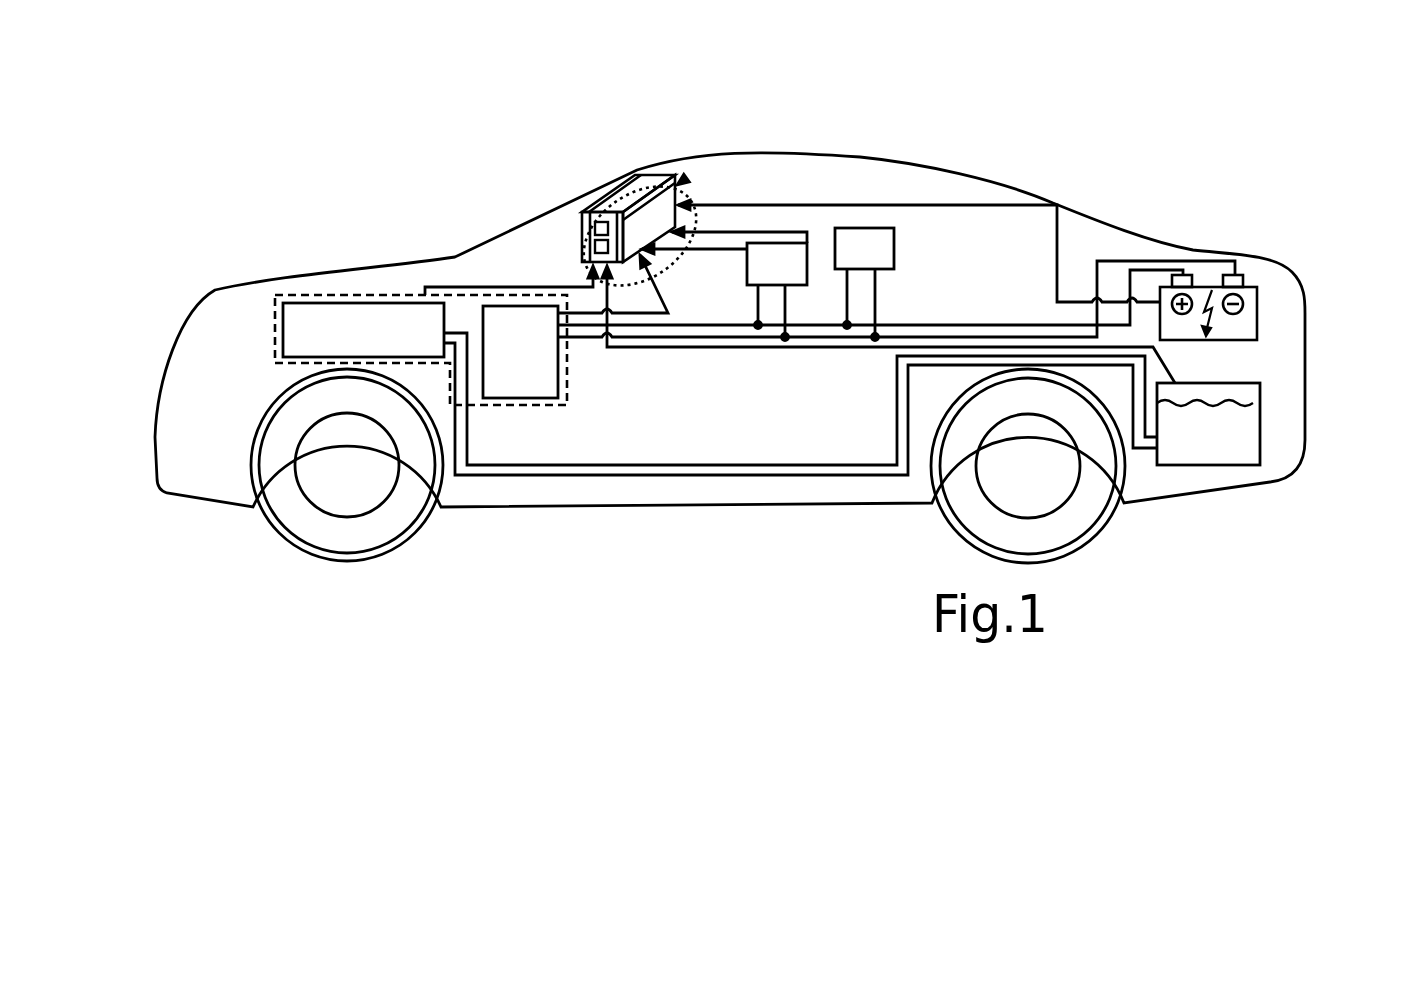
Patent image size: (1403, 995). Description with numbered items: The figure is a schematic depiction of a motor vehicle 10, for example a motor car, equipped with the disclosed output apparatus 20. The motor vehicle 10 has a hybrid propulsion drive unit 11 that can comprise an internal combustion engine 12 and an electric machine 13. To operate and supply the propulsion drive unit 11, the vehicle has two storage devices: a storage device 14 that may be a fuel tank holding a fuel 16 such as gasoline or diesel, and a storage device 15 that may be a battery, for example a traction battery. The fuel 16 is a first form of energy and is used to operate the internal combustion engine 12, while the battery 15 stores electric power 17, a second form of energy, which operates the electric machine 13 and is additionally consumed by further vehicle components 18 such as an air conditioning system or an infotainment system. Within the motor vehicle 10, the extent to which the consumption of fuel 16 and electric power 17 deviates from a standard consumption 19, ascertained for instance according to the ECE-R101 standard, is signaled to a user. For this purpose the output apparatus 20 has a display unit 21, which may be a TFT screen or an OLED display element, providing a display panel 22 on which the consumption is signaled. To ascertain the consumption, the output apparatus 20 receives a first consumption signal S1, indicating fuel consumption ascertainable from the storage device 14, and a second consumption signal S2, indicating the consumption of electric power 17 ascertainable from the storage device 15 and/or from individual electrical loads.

The motor vehicle 10 is at (1113, 210).
The hybrid propulsion drive unit 11 is at (275, 320).
The internal combustion engine 12 is at (312, 303).
The electric machine 13 is at (508, 398).
The storage device 14 is at (1195, 435).
The storage device 15 is at (1260, 308).
The fuel 16 is at (1248, 465).
The electric power 17 is at (1207, 292).
The vehicle components 18 is at (862, 227).
The standard consumption 19 is at (597, 230).
The output apparatus 20 is at (587, 212).
The display unit 21 is at (680, 183).
The display panel 22 is at (635, 222).
The first consumption signal S1 is at (577, 272).
The second consumption signal S2 is at (698, 220).